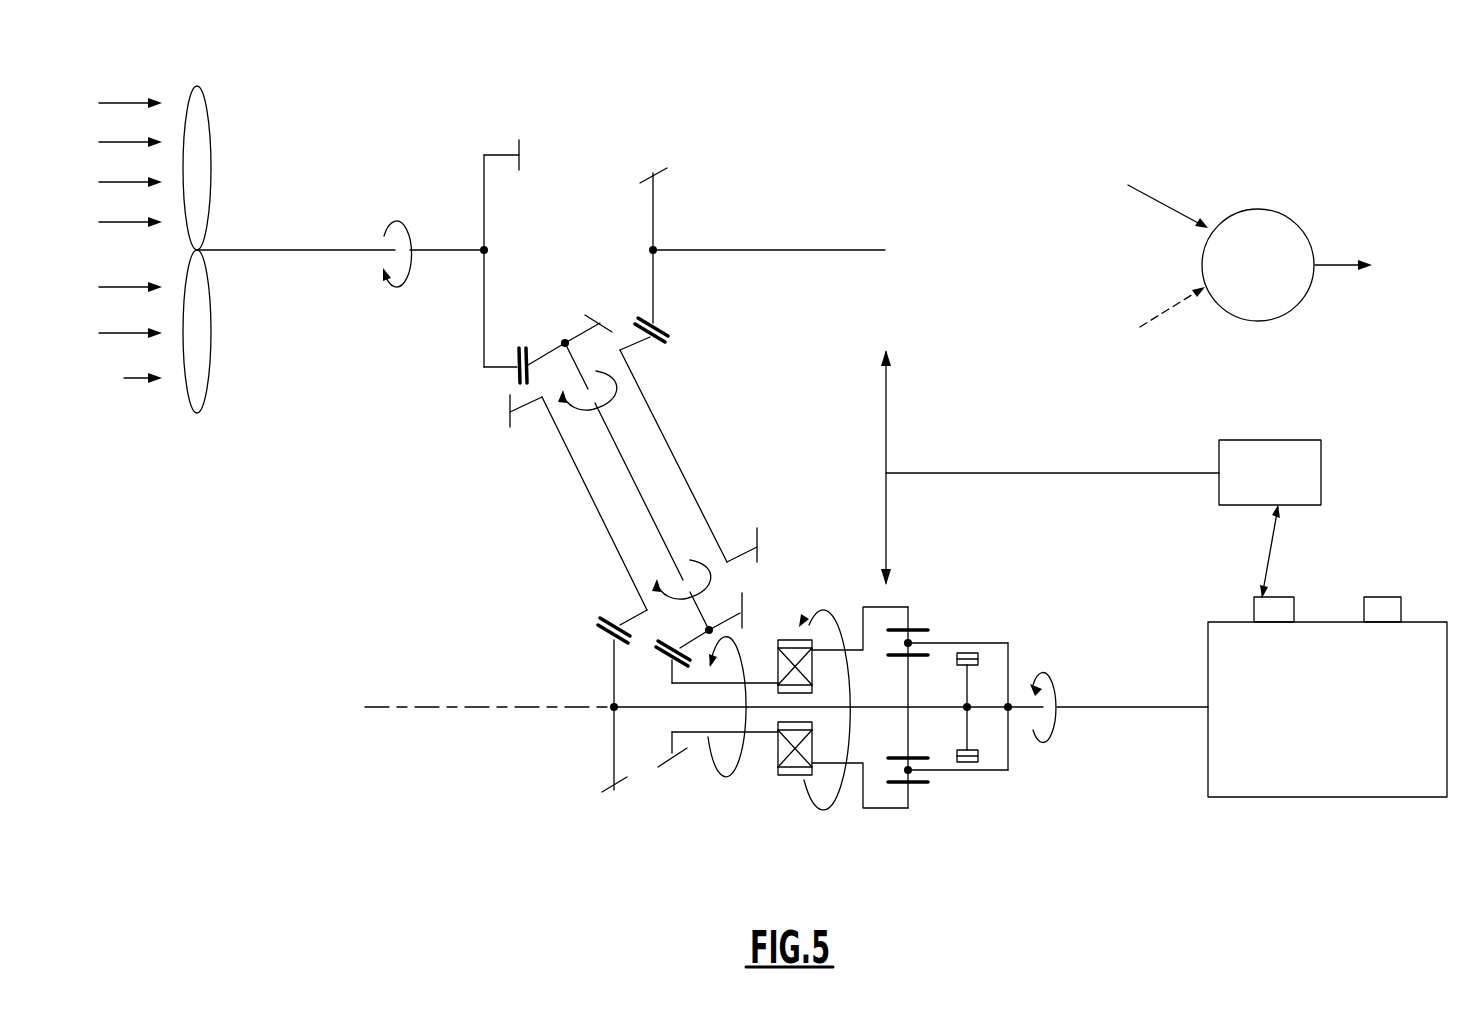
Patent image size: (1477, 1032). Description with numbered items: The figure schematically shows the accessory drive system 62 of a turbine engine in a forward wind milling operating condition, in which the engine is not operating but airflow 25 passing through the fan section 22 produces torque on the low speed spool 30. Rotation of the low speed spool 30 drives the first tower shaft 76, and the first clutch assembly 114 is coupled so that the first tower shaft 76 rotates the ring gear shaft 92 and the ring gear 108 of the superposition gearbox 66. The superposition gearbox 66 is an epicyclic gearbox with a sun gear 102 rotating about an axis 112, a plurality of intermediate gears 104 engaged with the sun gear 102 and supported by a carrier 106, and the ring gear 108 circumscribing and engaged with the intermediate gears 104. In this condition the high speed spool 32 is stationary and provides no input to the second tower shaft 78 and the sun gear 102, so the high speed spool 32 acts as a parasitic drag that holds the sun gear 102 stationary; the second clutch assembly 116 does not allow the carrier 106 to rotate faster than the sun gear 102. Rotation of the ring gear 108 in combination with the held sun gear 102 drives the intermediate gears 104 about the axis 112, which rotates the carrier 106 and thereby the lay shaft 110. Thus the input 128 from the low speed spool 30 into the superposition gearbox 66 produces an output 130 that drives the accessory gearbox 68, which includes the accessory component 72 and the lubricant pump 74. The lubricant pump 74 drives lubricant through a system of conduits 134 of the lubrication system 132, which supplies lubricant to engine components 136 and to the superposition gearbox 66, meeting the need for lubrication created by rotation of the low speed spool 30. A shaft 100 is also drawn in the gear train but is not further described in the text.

The fan section 22 is at (198, 427).
The airflow 25 is at (113, 352).
The low speed spool 30 is at (291, 250).
The high speed spool 32 is at (862, 250).
The accessory drive system 62 is at (360, 601).
The superposition gearbox 66 is at (920, 830).
The accessory gearbox 68 is at (1341, 740).
The accessory component 72 is at (1383, 605).
The lubricant pump 74 is at (1280, 603).
The first tower shaft 76 is at (627, 481).
The second tower shaft 78 is at (681, 450).
The ring gear shaft 92 is at (703, 735).
The shaft 100 is at (645, 712).
The sun gear 102 is at (915, 684).
The intermediate gears 104 is at (912, 771).
The carrier 106 is at (1012, 662).
The ring gear 108 is at (888, 800).
The lay shaft 110 is at (1115, 708).
The axis 112 is at (423, 707).
The first clutch assembly 114 is at (770, 765).
The second clutch assembly 116 is at (990, 645).
The input 128 is at (405, 220).
The output 130 is at (1053, 672).
The lubrication system 132 is at (1291, 492).
The conduits 134 is at (1068, 472).
The engine components 136 is at (886, 398).